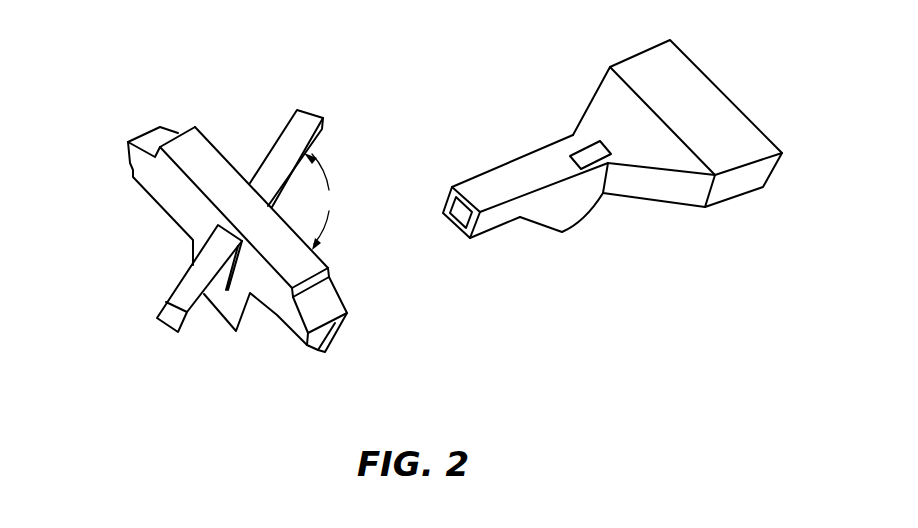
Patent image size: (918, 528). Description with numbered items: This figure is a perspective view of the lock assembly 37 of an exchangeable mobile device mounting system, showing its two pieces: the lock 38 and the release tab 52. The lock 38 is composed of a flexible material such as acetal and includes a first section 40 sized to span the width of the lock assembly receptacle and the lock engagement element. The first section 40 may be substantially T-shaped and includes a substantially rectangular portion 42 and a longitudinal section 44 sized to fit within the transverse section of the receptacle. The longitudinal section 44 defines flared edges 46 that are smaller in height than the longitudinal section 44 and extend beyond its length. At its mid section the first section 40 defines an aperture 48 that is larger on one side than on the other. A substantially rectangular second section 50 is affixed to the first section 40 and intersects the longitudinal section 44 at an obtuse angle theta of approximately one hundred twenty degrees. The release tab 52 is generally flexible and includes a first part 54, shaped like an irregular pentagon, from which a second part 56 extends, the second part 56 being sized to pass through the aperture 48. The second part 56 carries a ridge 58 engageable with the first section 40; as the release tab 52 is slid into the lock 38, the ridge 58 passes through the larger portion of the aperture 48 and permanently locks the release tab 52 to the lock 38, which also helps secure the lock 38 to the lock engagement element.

The lock assembly 37 is at (345, 327).
The lock 38 is at (96, 132).
The first section 40 is at (188, 126).
The substantially rectangular portion 42 is at (231, 332).
The longitudinal section 44 is at (172, 220).
The flared edges 46 is at (325, 306).
The aperture 48 is at (224, 284).
The second section 50 is at (305, 108).
The release tab 52 is at (768, 108).
The first part 54 is at (720, 87).
The second part 56 is at (475, 178).
The ridge 58 is at (563, 232).